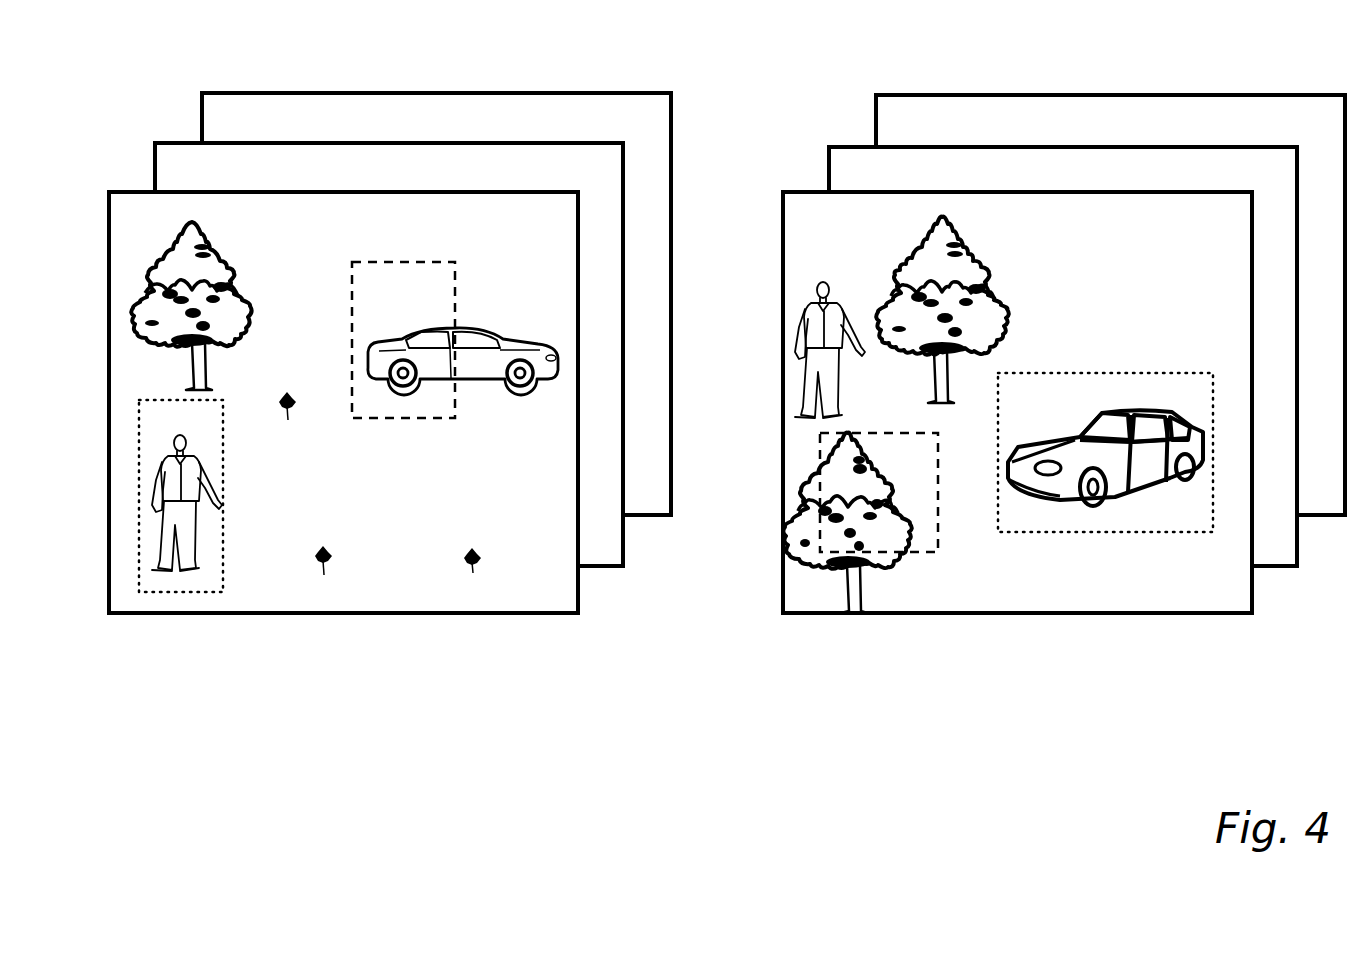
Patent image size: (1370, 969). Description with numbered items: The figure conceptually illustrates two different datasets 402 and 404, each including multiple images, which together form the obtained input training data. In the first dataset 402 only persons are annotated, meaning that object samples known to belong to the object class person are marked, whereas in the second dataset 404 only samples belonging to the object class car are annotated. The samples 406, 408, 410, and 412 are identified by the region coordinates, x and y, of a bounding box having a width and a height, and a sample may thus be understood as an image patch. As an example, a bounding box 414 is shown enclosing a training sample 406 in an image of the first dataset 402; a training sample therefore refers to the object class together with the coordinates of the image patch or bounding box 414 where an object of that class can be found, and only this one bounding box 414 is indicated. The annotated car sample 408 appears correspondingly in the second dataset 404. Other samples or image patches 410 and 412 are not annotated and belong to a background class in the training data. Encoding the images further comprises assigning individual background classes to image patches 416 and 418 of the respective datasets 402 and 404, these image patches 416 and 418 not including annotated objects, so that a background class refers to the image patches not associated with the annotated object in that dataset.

The dataset 402 is at (390, 392).
The dataset 404 is at (1027, 392).
The training sample 406 is at (232, 553).
The sample 408 is at (1120, 545).
The image patch 410 is at (473, 408).
The image patch 412 is at (810, 582).
The bounding box 414 is at (192, 590).
The image patch 416 is at (408, 420).
The image patch 418 is at (938, 532).